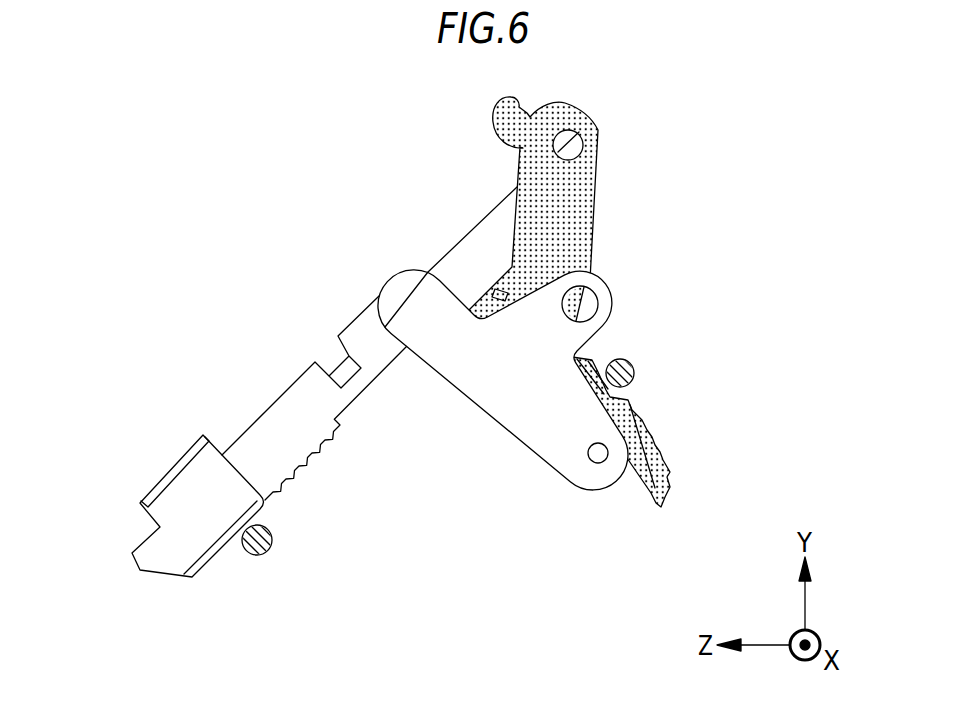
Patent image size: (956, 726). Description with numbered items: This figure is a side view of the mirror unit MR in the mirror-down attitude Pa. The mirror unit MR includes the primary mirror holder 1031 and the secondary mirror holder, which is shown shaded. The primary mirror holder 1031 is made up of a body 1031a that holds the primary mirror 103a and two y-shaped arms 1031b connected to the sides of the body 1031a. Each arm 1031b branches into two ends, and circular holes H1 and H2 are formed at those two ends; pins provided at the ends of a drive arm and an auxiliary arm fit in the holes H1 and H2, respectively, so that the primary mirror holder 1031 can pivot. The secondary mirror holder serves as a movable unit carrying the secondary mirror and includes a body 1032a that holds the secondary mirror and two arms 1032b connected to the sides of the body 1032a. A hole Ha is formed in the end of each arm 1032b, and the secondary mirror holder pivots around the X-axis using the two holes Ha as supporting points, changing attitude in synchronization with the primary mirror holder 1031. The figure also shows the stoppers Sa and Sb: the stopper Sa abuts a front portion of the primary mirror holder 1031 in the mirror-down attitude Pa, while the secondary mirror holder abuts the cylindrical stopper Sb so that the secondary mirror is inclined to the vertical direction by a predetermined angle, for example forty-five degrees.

The mirror unit MR is at (181, 241).
The mirror-down attitude Pa is at (179, 345).
The primary mirror 103a is at (380, 269).
The primary mirror holder 1031 is at (334, 392).
The body 1031a is at (322, 460).
The y-shaped arms 1031b is at (453, 363).
The body 1032a is at (669, 475).
The arms 1032b is at (593, 193).
The hole Ha is at (590, 145).
The circular hole H1 is at (603, 303).
The circular hole H2 is at (600, 458).
The stopper Sa is at (258, 556).
The stopper Sb is at (634, 373).